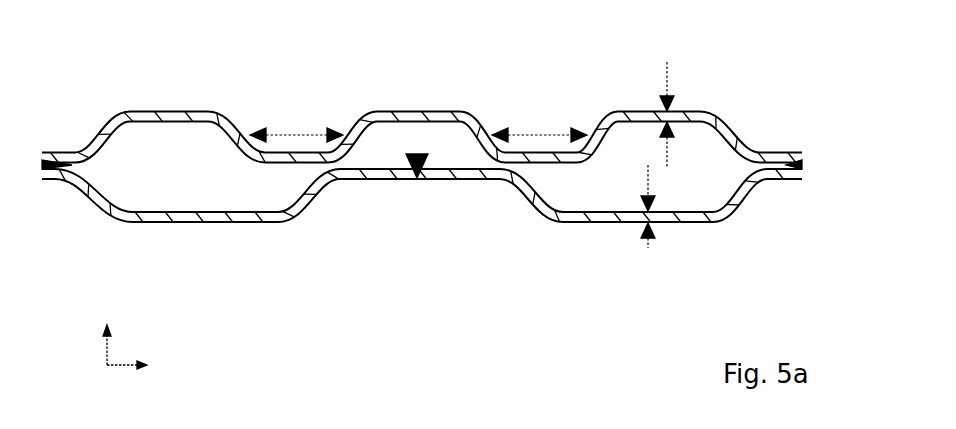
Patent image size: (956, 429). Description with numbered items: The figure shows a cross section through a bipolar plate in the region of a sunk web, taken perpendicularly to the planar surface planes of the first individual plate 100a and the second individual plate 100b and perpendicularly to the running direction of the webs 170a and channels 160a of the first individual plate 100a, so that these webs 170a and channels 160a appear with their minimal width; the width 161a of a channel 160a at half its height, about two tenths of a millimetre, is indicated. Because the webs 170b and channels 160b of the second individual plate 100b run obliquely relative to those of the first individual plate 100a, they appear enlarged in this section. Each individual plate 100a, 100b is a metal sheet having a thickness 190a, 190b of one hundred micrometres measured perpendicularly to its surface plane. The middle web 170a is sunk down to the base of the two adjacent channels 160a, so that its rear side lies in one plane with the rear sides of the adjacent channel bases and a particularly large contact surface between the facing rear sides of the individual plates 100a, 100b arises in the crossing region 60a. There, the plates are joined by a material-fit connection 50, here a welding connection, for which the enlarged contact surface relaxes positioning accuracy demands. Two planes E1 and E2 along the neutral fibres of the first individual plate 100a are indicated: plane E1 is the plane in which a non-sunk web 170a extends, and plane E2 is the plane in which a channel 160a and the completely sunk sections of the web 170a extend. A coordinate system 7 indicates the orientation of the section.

The first individual plate 100a is at (743, 124).
The second individual plate 100b is at (758, 208).
The web 170a is at (187, 112).
The web 170b is at (212, 223).
The channel 160a is at (307, 152).
The channel 160b is at (386, 180).
The width of the channel 161a is at (303, 133).
The thickness of the first individual plate 190a is at (692, 102).
The thickness of the second individual plate 190b is at (692, 230).
The material-fit connection 50 is at (417, 180).
The crossing region 60a is at (303, 168).
The coordinate system 7 is at (103, 352).
The plane E1 is at (148, 115).
The plane E2 is at (52, 161).